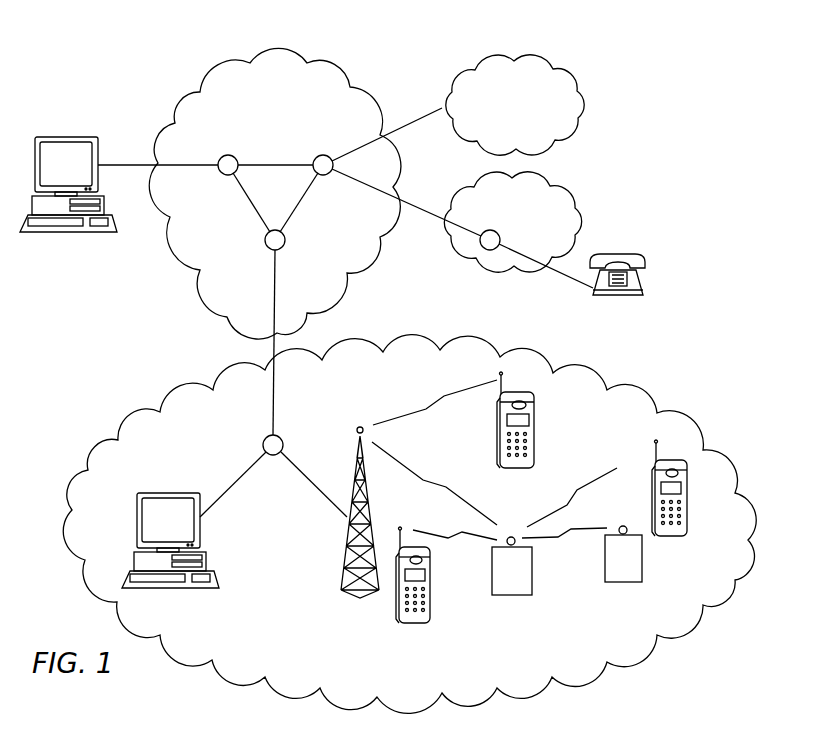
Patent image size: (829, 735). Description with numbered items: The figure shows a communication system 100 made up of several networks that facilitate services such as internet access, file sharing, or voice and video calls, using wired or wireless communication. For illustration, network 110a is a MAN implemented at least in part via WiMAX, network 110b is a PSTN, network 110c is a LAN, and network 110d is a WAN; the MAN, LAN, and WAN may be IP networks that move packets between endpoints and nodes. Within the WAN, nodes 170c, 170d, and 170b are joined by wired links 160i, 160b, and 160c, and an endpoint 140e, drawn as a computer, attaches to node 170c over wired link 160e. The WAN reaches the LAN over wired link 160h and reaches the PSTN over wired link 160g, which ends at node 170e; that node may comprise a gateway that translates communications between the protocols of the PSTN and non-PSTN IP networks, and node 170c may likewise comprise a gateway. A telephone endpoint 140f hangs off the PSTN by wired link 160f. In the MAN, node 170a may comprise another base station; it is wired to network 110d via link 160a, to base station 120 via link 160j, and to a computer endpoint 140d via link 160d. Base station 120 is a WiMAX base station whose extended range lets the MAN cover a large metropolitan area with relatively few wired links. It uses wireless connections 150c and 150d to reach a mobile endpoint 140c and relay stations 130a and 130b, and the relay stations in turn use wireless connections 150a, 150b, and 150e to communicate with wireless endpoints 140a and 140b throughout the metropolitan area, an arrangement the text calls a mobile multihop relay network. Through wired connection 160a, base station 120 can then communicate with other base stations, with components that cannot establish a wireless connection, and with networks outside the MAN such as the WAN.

The communication system 100 is at (717, 147).
The MAN network 110a is at (178, 388).
The PSTN network 110b is at (478, 271).
The LAN network 110c is at (590, 106).
The WAN network 110d is at (210, 65).
The base station 120 is at (342, 575).
The relay station 130a is at (512, 597).
The relay station 130b is at (618, 584).
The endpoint 140a is at (397, 600).
The endpoint 140b is at (677, 537).
The endpoint 140c is at (540, 415).
The endpoint 140d is at (167, 492).
The endpoint 140e is at (68, 135).
The endpoint 140f is at (612, 254).
The wireless connection 150a is at (470, 541).
The wireless connection 150b is at (605, 474).
The wireless connection 150c is at (478, 390).
The wireless connection 150d is at (464, 498).
The wireless connection 150e is at (550, 541).
The wired connection 160a is at (276, 404).
The wired link 160b is at (250, 202).
The wired link 160c is at (302, 200).
The wired link 160d is at (243, 481).
The wired link 160e is at (143, 163).
The wired link 160f is at (565, 278).
The wired link 160g is at (412, 203).
The wired link 160h is at (399, 125).
The wired link 160i is at (286, 162).
The link 160j is at (312, 483).
The node 170a is at (263, 442).
The node 170b is at (286, 243).
The node 170c is at (228, 154).
The node 170d is at (325, 154).
The node 170e is at (494, 229).